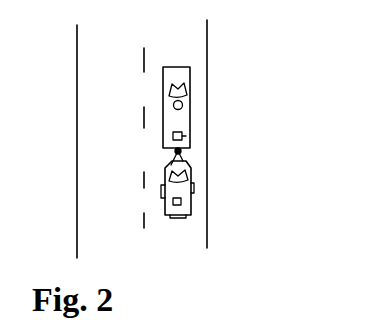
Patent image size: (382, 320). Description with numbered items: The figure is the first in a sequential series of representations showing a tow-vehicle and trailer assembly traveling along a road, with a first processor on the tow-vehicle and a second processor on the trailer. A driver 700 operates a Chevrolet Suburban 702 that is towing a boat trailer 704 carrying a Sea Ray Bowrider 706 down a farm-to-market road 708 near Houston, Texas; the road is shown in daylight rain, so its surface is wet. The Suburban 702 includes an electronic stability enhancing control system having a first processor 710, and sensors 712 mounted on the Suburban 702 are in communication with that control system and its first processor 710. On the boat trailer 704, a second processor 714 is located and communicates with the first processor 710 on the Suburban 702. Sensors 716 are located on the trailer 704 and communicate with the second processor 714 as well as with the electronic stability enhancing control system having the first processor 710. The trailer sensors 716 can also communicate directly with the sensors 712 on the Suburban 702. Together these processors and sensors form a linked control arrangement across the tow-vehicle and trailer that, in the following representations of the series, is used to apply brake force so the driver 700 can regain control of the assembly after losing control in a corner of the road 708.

The driver 700 is at (181, 102).
The Chevrolet Suburban 4×2 702 is at (182, 131).
The boat trailer 704 is at (193, 187).
The Sea Ray Bowrider 706 is at (181, 162).
The FM 1314 708 is at (103, 98).
The first processor 710 is at (183, 87).
The sensors 712 is at (183, 135).
The second processor 714 is at (186, 174).
The sensors 716 is at (181, 200).